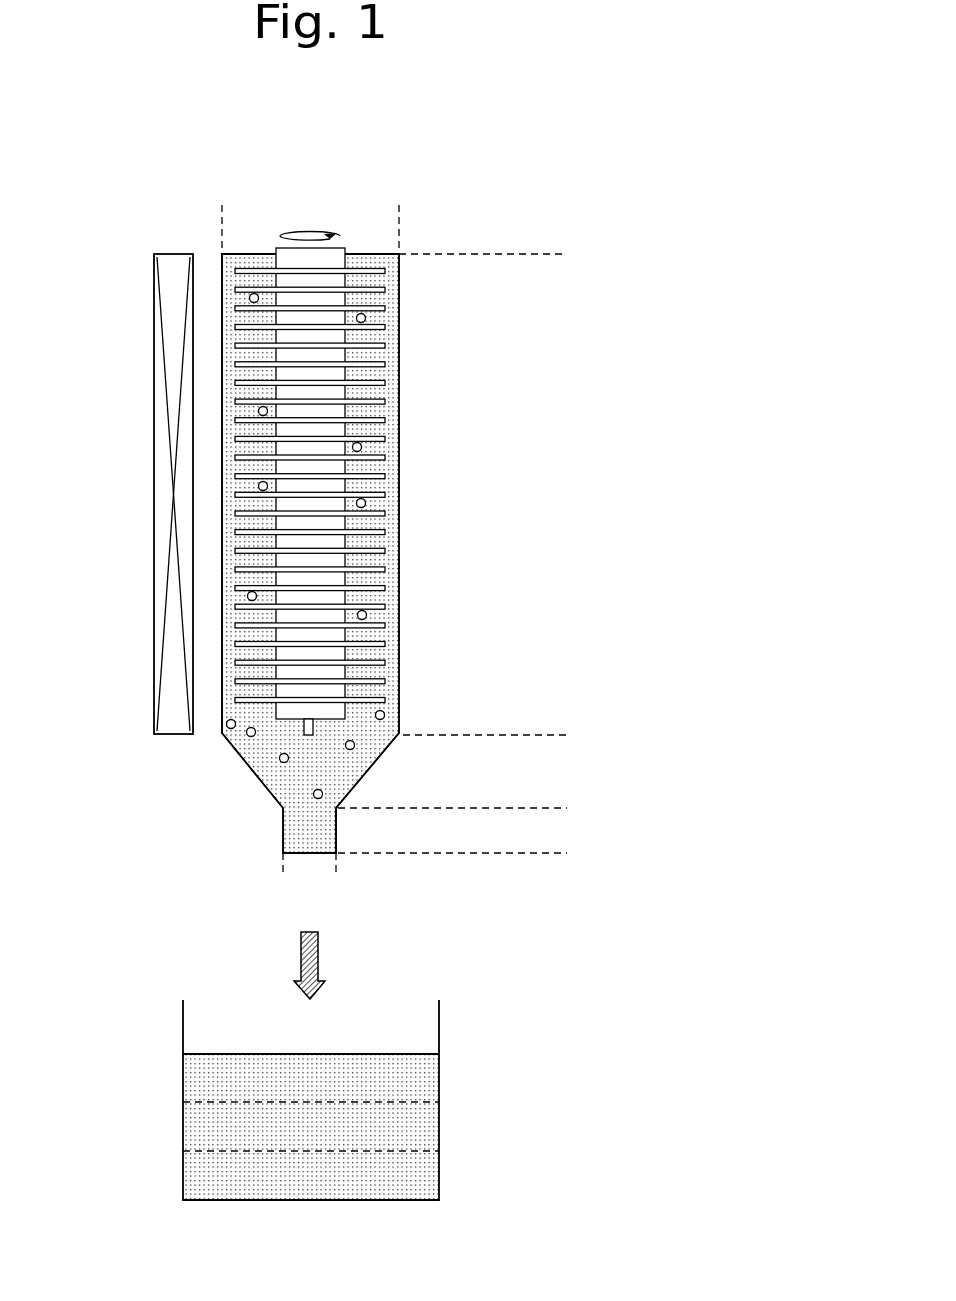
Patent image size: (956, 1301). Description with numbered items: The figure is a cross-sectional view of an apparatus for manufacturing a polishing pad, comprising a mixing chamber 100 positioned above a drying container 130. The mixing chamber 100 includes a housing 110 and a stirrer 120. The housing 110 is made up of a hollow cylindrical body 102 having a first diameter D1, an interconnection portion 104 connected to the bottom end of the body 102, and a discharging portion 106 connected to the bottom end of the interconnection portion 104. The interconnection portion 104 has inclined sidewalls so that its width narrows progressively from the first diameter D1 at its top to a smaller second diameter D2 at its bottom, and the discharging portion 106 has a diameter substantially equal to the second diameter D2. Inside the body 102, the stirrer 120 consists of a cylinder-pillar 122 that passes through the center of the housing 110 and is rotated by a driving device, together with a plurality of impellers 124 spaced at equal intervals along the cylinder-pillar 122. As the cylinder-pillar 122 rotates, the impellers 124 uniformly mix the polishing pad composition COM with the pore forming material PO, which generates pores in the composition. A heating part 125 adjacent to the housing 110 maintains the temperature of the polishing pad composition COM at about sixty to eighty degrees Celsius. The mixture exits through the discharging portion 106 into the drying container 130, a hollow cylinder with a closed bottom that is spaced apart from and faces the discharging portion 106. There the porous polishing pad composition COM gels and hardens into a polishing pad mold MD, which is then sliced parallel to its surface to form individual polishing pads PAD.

The mixing chamber 100 is at (433, 497).
The housing 110 is at (447, 553).
The body 102 is at (563, 254).
The interconnection portion 104 is at (563, 735).
The discharging portion 106 is at (443, 830).
The stirrer 120 is at (386, 491).
The cylinder-pillar 122 is at (335, 262).
The impellers 124 is at (397, 289).
The heating part 125 is at (160, 492).
The drying container 130 is at (378, 1054).
The first diameter D1 is at (399, 213).
The second diameter D2 is at (336, 867).
The pore forming material PO is at (248, 737).
The polishing pad composition COM is at (281, 763).
The polishing pad PAD is at (428, 1078).
The polishing pad mold MD is at (378, 1127).